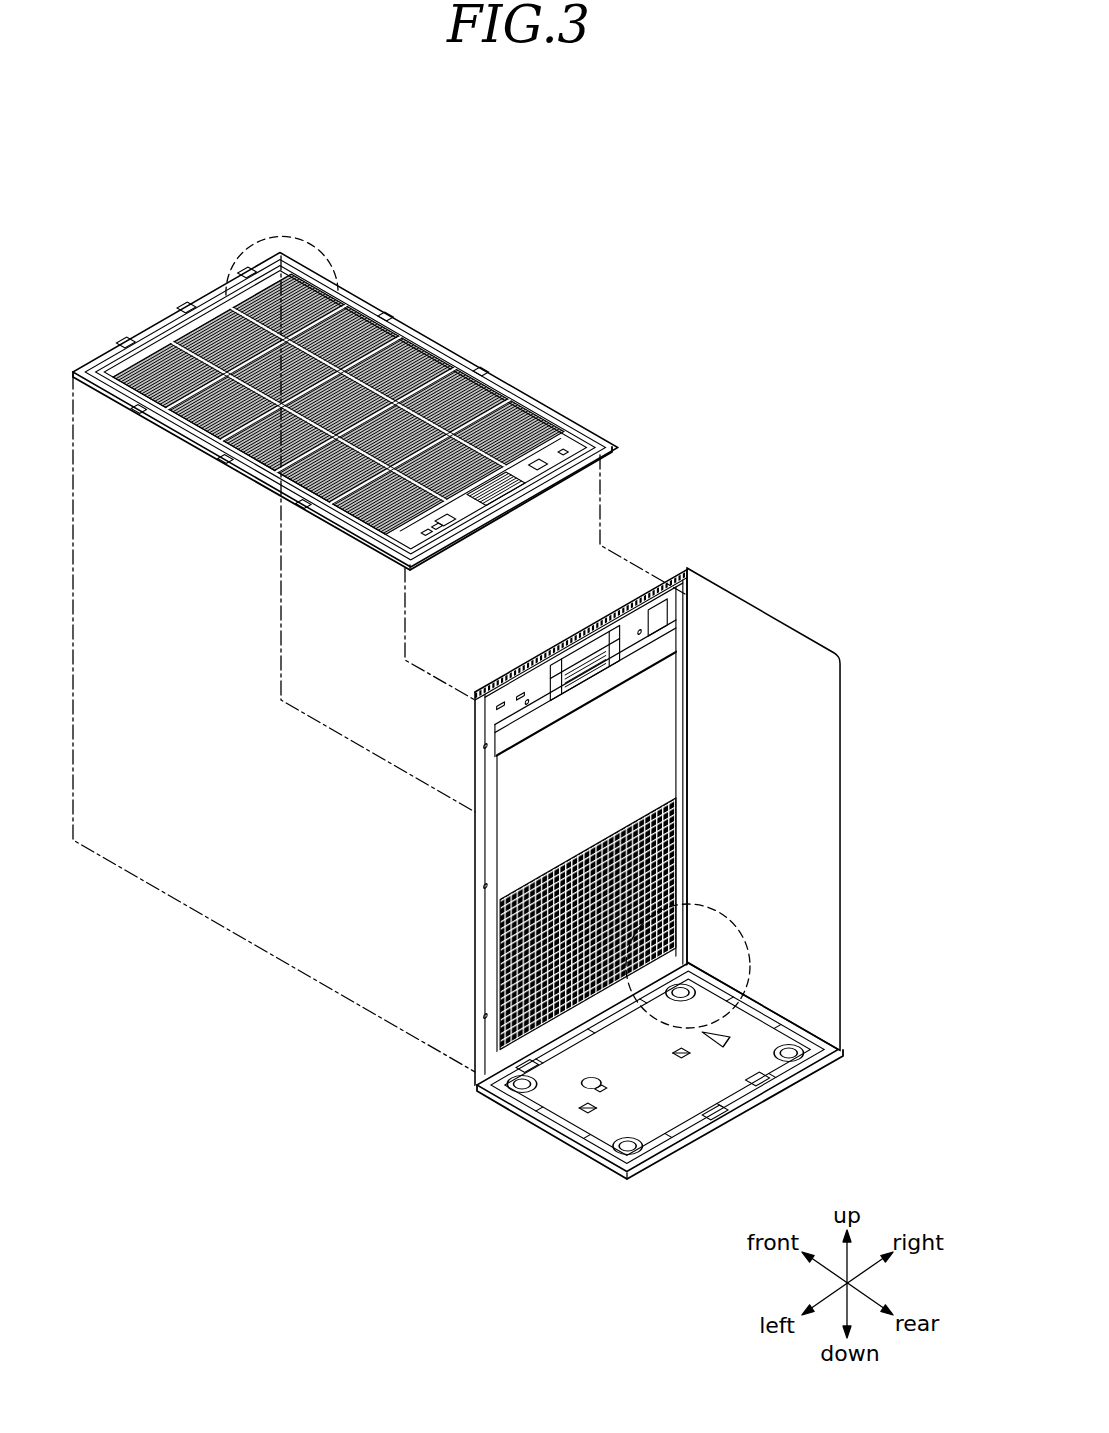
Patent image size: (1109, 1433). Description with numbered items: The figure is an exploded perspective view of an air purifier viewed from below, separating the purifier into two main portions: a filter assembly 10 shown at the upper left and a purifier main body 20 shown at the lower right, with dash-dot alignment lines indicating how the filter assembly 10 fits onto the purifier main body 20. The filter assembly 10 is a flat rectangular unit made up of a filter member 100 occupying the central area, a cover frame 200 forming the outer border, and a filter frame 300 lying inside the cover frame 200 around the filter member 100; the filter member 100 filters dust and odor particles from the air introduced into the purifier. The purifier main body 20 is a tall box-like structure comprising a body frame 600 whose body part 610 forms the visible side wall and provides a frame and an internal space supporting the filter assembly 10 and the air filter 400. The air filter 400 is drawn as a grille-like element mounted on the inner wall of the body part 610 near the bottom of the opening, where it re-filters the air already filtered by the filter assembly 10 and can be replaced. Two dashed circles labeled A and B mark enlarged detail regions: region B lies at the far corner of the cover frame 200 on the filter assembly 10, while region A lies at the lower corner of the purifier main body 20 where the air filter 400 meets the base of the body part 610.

The filter assembly 10 is at (344, 402).
The purifier main body 20 is at (689, 873).
The filter member 100 is at (357, 533).
The cover frame 200 is at (597, 417).
The filter frame 300 is at (180, 436).
The air filter 400 is at (498, 968).
The body frame 600 is at (833, 809).
The body part 610 is at (823, 877).
The detail region A is at (710, 910).
The detail region B is at (277, 233).